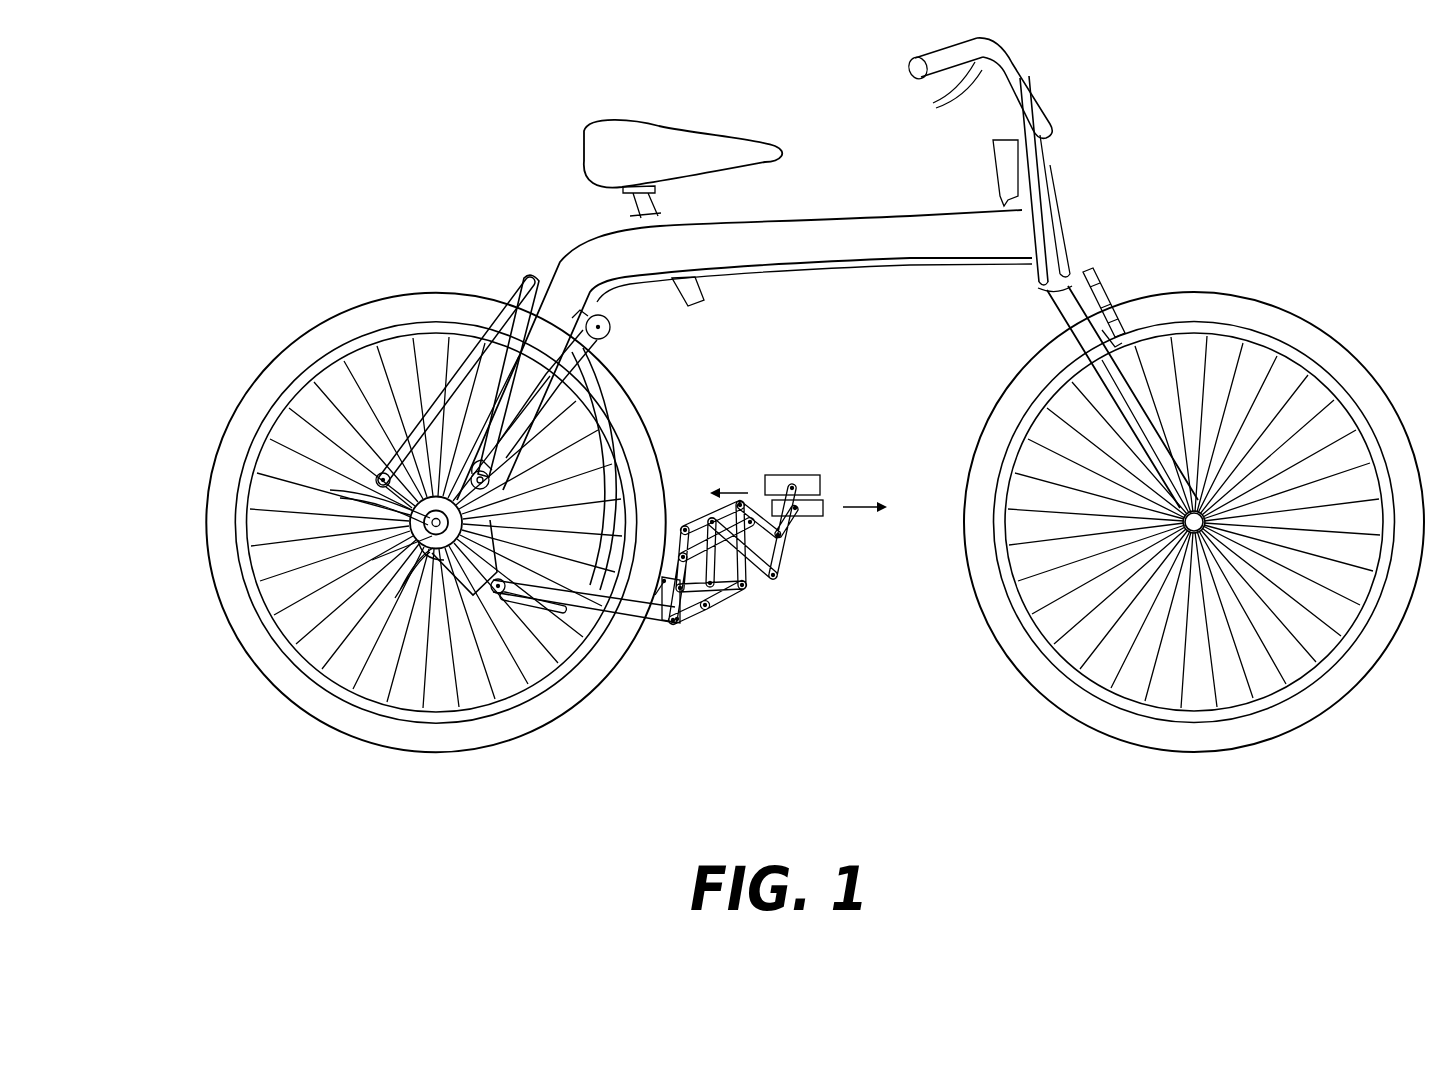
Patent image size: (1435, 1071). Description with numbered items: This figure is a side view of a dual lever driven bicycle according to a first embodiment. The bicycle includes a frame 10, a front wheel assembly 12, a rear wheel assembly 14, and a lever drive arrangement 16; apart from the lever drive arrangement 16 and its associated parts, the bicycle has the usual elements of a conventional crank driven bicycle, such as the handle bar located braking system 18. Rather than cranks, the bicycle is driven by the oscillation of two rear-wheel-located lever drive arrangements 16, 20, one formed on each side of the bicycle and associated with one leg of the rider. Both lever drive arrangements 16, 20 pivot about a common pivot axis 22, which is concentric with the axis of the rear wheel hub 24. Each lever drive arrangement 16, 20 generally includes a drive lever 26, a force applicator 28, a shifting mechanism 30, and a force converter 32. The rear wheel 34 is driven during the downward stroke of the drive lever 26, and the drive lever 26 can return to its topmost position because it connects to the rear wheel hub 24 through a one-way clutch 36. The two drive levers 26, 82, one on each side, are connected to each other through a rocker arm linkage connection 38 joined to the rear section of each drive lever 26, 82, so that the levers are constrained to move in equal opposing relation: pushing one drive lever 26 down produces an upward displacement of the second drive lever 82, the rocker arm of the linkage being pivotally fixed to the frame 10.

The frame 10 is at (838, 175).
The front wheel assembly 12 is at (1310, 298).
The rear wheel assembly 14 is at (272, 320).
The lever drive arrangement 16 is at (752, 645).
The handle bar located braking system 18 is at (960, 100).
The lever drive arrangement 20 is at (700, 502).
The common pivot axis 22 is at (400, 590).
The rear wheel hub 24 is at (330, 490).
The drive lever 26 is at (600, 620).
The force applicator 28 is at (848, 525).
The shifting mechanism 30 is at (762, 595).
The force converter 32 is at (472, 602).
The rear wheel 34 is at (240, 428).
The one-way clutch 36 is at (372, 560).
The rocker arm linkage connection 38 is at (440, 365).
The drive lever 82 is at (618, 420).